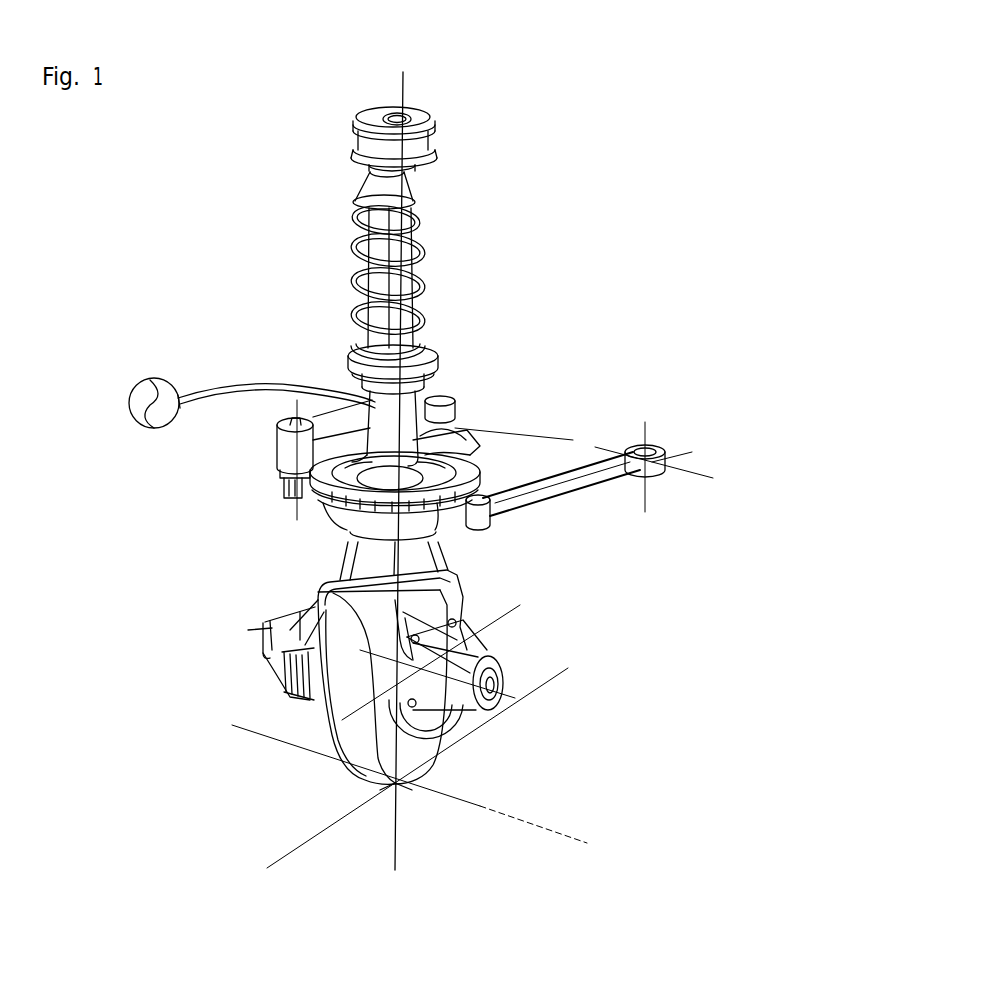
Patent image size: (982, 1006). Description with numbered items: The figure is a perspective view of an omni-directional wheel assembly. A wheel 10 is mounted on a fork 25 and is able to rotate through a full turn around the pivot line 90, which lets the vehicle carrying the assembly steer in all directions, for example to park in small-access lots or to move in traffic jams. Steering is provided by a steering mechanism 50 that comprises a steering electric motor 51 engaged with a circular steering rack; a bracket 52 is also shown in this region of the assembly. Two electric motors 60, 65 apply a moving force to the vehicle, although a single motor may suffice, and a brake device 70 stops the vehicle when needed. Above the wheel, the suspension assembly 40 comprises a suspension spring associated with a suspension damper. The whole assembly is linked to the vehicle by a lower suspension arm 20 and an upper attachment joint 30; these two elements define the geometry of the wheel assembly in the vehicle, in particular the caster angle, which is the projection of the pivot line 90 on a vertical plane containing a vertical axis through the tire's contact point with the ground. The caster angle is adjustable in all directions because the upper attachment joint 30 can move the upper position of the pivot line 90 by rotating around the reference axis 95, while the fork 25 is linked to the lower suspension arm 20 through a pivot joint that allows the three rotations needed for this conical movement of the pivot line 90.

The wheel 10 is at (513, 709).
The lower suspension arm 20 is at (632, 558).
The fork 25 is at (559, 647).
The upper attachment joint 30 is at (291, 184).
The suspension assembly 40 is at (300, 293).
The steering mechanism 50 is at (279, 497).
The steering electric motor 51 is at (225, 454).
The bracket 52 is at (567, 403).
The electric motor 60 is at (570, 707).
The electric motor 65 is at (193, 650).
The brake device 70 is at (196, 688).
The pivot line 90 is at (301, 502).
The reference axis 95 is at (472, 127).